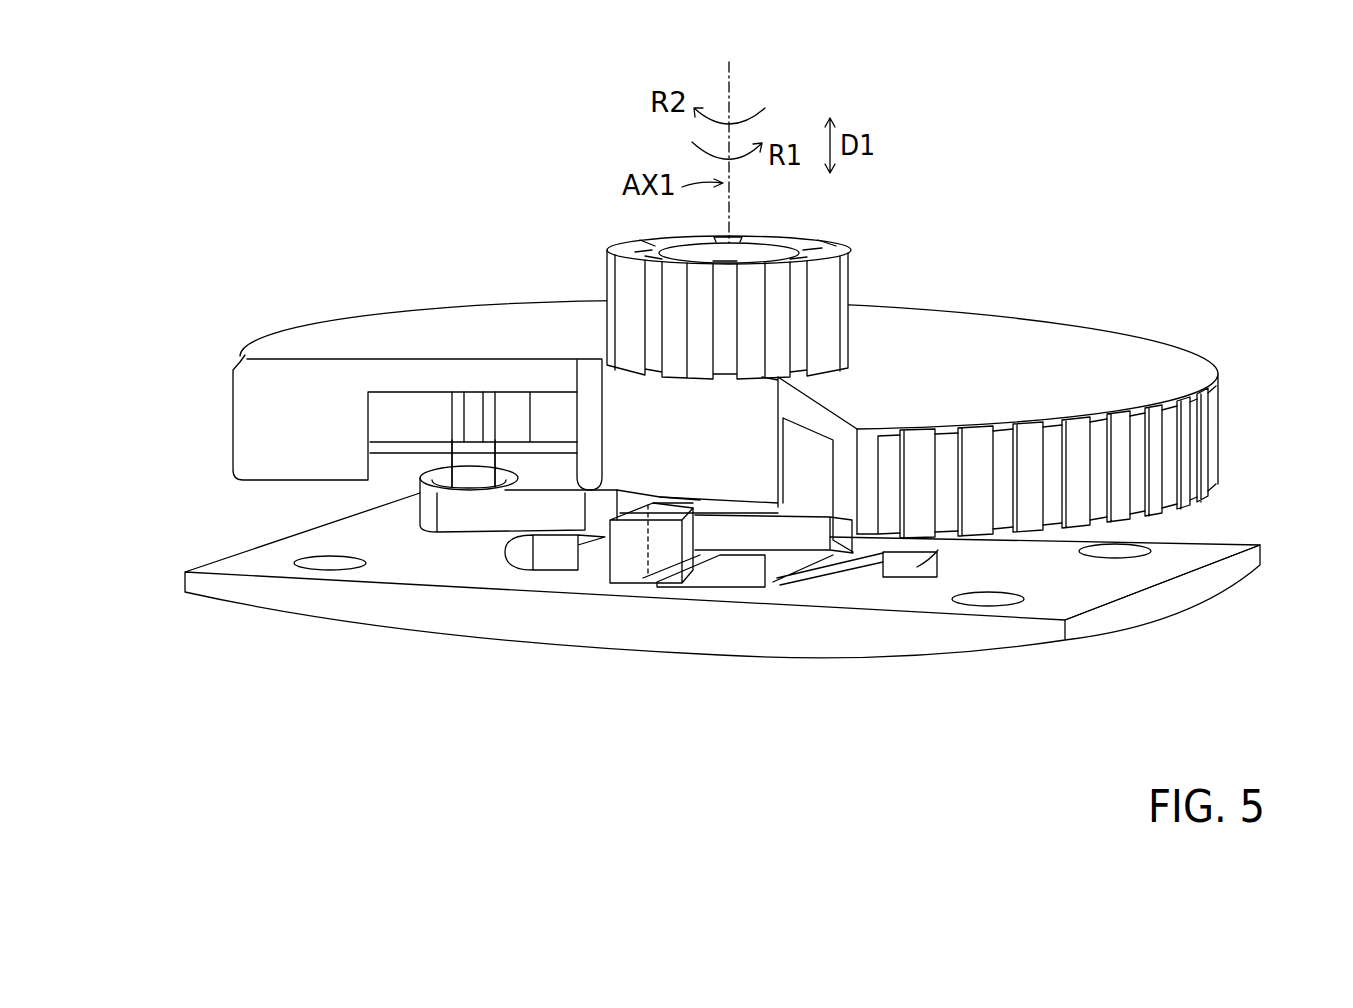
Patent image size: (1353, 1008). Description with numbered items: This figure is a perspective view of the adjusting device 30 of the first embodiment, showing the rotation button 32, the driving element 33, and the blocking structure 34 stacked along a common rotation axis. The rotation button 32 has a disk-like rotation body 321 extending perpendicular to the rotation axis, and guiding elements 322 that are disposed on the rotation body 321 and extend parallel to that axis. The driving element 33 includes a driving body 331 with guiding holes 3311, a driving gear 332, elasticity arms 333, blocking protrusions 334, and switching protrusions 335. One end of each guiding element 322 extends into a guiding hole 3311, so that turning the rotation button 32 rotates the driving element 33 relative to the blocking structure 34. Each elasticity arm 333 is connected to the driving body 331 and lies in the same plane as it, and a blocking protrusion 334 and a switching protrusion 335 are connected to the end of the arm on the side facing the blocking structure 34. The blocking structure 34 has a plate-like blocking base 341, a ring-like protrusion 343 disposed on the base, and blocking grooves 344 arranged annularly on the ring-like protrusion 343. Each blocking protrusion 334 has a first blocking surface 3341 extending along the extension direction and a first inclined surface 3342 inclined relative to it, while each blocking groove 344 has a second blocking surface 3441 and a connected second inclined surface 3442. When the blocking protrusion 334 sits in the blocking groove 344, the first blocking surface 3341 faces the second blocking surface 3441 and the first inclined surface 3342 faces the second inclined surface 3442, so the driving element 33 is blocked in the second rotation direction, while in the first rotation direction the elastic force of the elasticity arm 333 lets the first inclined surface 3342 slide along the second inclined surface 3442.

The adjusting device 30 is at (1152, 100).
The rotation button 32 is at (1167, 315).
The rotation body 321 is at (968, 323).
The guiding element 322 is at (477, 413).
The driving element 33 is at (385, 486).
The driving body 331 is at (455, 528).
The guiding hole 3311 is at (513, 487).
The driving gear 332 is at (607, 234).
The elasticity arm 333 is at (745, 530).
The blocking protrusion 334 is at (745, 720).
The first blocking surface 3341 is at (648, 560).
The first inclined surface 3342 is at (690, 560).
The switching protrusion 335 is at (693, 527).
The blocking structure 34 is at (1268, 540).
The blocking base 341 is at (1098, 623).
The ring-like protrusion 343 is at (872, 578).
The blocking groove 344 is at (933, 720).
The second blocking surface 3441 is at (600, 562).
The second inclined surface 3442 is at (860, 573).